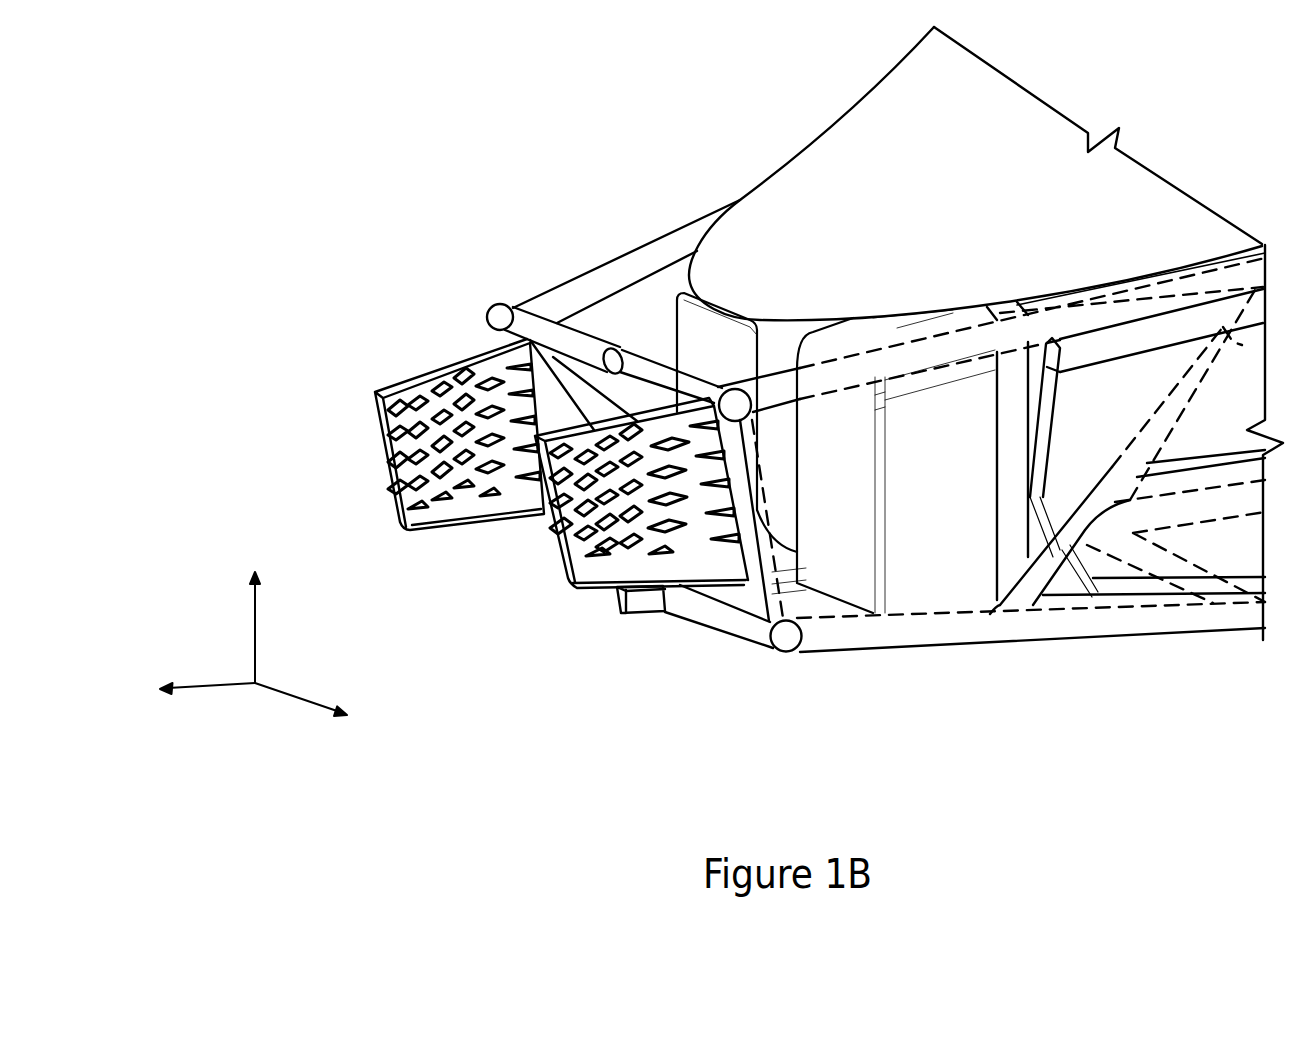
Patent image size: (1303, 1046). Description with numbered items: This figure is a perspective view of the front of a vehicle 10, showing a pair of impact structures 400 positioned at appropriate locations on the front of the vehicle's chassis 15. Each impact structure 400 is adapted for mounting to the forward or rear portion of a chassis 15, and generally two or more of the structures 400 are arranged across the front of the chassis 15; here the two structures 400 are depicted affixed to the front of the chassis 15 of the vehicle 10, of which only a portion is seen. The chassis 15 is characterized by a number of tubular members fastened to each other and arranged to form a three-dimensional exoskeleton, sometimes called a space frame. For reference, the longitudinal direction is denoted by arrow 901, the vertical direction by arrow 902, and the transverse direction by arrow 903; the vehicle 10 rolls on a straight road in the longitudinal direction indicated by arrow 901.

The vehicle 10 is at (842, 138).
The chassis 15 is at (1172, 613).
The impact structure 400 is at (663, 400).
The arrow 901 is at (186, 688).
The arrow 902 is at (256, 614).
The arrow 903 is at (324, 707).